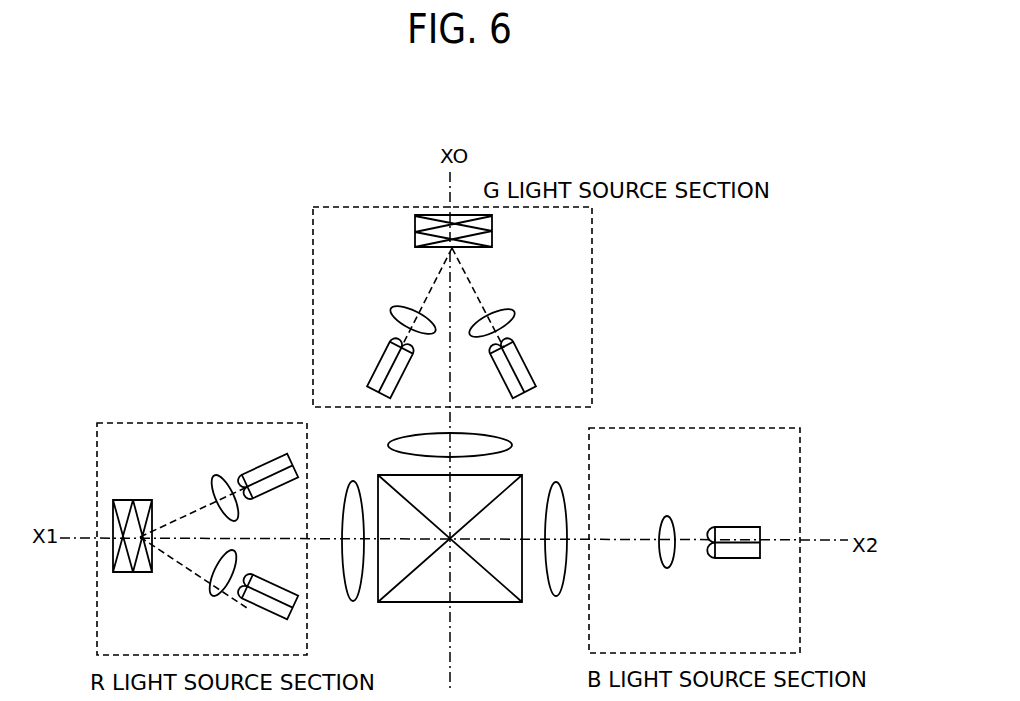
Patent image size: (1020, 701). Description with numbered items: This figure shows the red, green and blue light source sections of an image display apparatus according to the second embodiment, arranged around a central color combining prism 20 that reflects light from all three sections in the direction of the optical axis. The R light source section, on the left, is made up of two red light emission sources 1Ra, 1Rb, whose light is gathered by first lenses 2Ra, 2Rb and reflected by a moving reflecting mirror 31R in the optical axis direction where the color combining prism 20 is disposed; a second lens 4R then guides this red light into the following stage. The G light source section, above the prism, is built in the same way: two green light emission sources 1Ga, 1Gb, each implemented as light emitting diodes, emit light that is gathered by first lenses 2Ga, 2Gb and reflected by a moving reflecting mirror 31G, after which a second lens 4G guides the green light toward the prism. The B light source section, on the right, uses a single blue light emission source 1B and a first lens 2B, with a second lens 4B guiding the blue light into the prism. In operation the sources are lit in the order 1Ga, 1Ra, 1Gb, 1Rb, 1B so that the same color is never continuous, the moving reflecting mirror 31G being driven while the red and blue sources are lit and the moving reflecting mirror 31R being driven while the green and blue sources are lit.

The moving reflecting mirror 31G is at (409, 215).
The first lens 2Gb is at (392, 311).
The first lens 2Ga is at (546, 300).
The light emission source 1Gb is at (376, 378).
The light emission source 1Ga is at (560, 368).
The second lens 4G is at (508, 448).
The color combining prism 20 is at (475, 602).
The second lens 4R is at (353, 601).
The second lens 4B is at (556, 596).
The moving reflecting mirror 31R is at (152, 496).
The first lens 2Rb is at (216, 478).
The light emission source 1Rb is at (277, 463).
The first lens 2Ra is at (210, 587).
The light emission source 1Ra is at (270, 614).
The first lens 2B is at (667, 568).
The light emission source 1B is at (735, 558).